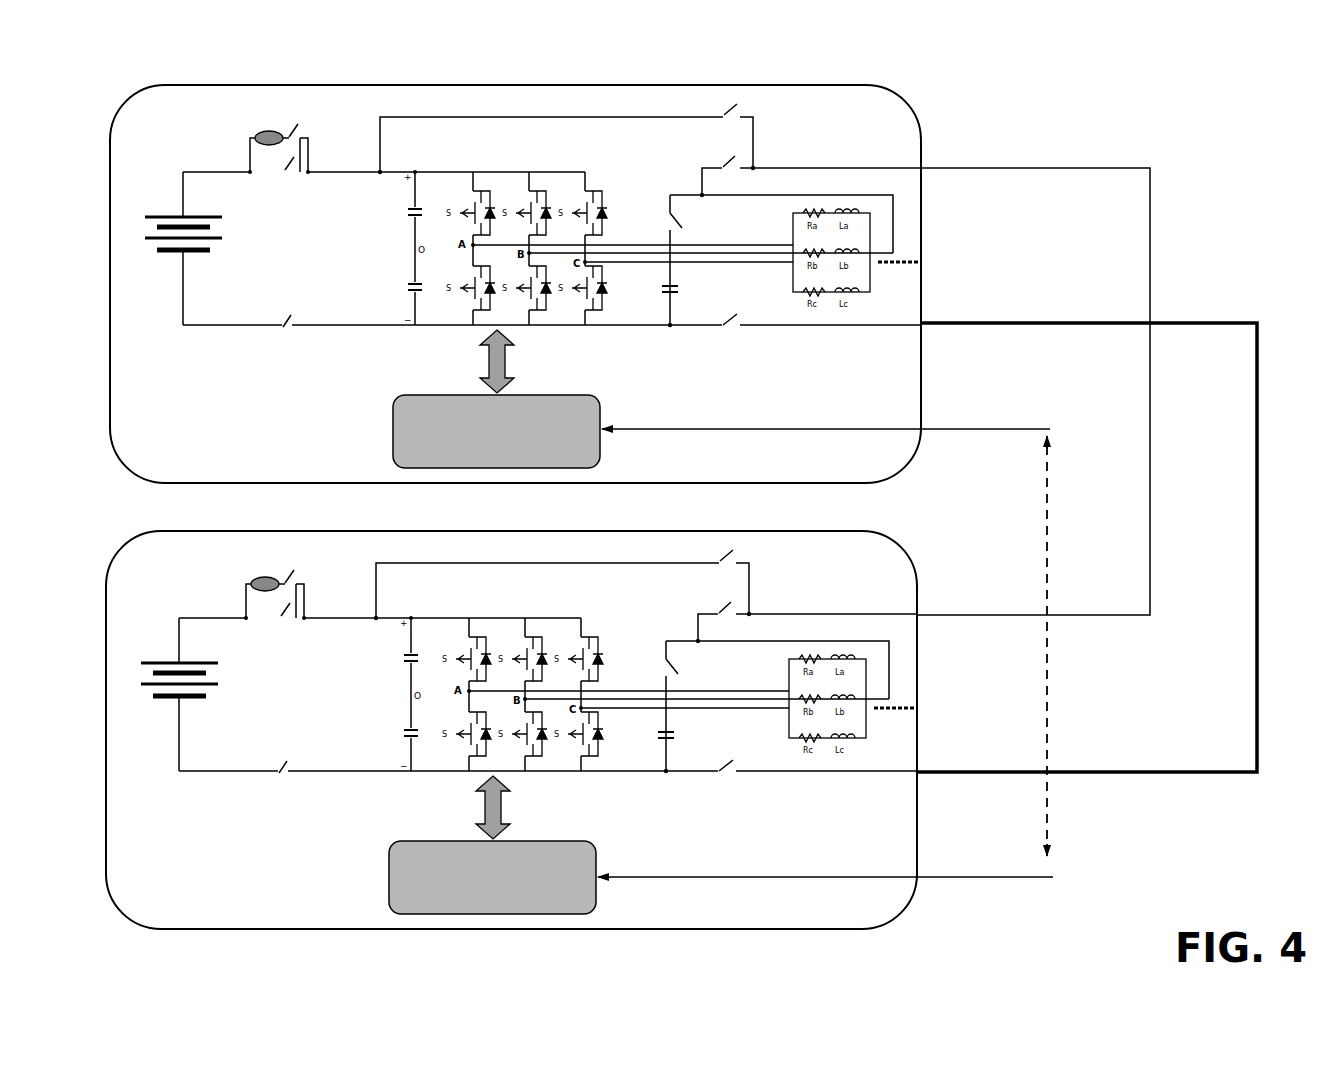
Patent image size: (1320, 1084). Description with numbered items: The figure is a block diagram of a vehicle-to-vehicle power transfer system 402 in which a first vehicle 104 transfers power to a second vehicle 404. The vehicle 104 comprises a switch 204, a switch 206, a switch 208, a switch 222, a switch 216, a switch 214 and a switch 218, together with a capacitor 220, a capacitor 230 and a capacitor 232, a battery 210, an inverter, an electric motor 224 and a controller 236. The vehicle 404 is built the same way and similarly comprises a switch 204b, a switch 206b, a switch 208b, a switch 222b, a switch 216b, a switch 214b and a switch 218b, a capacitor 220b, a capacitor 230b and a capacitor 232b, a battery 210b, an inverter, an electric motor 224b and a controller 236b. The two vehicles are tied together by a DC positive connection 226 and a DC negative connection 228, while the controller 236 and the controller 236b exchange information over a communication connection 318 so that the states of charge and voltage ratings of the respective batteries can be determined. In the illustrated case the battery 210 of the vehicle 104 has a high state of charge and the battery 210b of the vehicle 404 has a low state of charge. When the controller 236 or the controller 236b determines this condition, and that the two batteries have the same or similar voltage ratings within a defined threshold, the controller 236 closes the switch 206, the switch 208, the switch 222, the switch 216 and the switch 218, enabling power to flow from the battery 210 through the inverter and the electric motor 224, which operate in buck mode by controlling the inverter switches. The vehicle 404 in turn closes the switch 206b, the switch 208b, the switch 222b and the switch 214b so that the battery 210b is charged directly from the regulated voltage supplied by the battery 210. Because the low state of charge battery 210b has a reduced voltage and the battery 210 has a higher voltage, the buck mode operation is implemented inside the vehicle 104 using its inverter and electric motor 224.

The vehicle 104 is at (372, 85).
The vehicle 404 is at (511, 710).
The vehicle-to-vehicle power transfer system 402 is at (1189, 108).
The switch 204 is at (287, 128).
The switch 204b is at (240, 576).
The switch 206 is at (292, 175).
The switch 206b is at (260, 644).
The switch 208 is at (285, 333).
The switch 208b is at (232, 820).
The battery 210 is at (168, 258).
The battery 210b is at (190, 723).
The switch 214 is at (723, 108).
The switch 214b is at (562, 560).
The switch 216 is at (729, 162).
The switch 216b is at (766, 609).
The switch 218 is at (668, 213).
The switch 218b is at (702, 680).
The capacitor 220 is at (661, 295).
The capacitor 220b is at (613, 767).
The switch 222 is at (736, 334).
The switch 222b is at (778, 794).
The electric motor 224 is at (879, 291).
The electric motor 224b is at (893, 708).
The DC positive connection 226 is at (1148, 258).
The DC negative connection 228 is at (1253, 633).
The capacitor 230 is at (403, 218).
The capacitor 230b is at (358, 680).
The capacitor 232 is at (402, 288).
The capacitor 232b is at (358, 741).
The controller 236 is at (721, 399).
The controller 236b is at (721, 845).
The communication connection 318 is at (1056, 817).